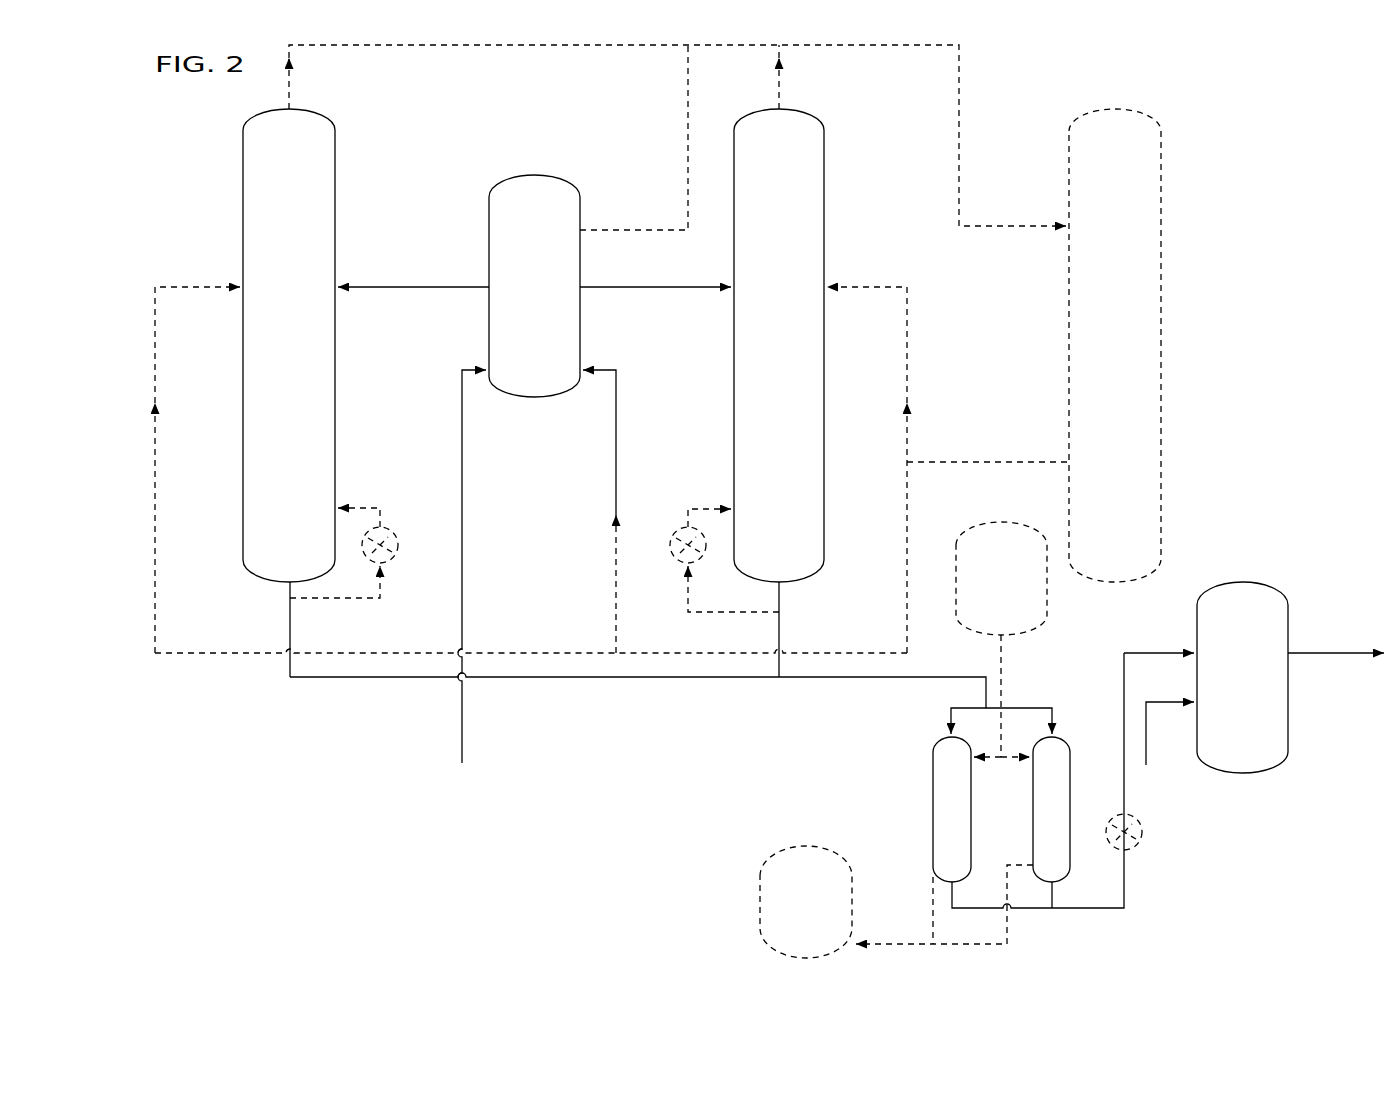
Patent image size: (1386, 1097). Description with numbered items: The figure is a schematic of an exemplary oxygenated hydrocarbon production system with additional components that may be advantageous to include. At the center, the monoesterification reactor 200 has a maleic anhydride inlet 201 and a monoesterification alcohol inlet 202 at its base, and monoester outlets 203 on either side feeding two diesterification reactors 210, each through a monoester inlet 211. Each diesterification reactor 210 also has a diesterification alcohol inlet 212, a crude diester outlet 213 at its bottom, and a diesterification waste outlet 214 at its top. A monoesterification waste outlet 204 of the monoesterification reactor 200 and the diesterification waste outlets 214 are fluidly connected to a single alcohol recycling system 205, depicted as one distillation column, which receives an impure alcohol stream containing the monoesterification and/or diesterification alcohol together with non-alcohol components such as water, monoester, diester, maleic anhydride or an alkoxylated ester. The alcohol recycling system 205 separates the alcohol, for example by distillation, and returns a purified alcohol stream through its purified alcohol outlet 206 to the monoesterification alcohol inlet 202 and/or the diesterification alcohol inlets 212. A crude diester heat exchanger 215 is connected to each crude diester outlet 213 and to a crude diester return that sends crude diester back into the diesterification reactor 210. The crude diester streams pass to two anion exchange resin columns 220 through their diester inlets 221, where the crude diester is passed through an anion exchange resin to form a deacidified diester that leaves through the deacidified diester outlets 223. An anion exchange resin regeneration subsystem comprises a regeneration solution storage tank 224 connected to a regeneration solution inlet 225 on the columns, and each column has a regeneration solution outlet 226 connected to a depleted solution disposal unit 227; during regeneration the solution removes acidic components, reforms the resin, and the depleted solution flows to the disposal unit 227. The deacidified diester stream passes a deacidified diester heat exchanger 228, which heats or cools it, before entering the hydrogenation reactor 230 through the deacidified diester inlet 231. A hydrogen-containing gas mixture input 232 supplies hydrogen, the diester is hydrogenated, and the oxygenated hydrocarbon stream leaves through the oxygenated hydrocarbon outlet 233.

The monoesterification reactor 200 is at (534, 286).
The maleic anhydride inlet 201 is at (468, 549).
The monoesterification alcohol inlet 202 is at (610, 494).
The monoester outlet 203 is at (534, 273).
The monoesterification waste outlet 204 is at (634, 137).
The alcohol recycling system 205 is at (1115, 345).
The purified alcohol outlet 206 is at (988, 450).
The diesterification reactor 210 is at (533, 345).
The monoester inlet 211 is at (540, 310).
The diesterification alcohol inlet 212 is at (531, 456).
The crude diester outlet 213 is at (534, 629).
The diesterification waste outlet 214 is at (677, 135).
The crude diester heat exchanger 215 is at (534, 546).
The anion exchange resin column 220 is at (1001, 809).
The diester inlet 221 is at (699, 707).
The deacidified diester outlet 223 is at (1038, 780).
The regeneration solution storage tank 224 is at (1001, 578).
The regeneration solution inlet 225 is at (1002, 711).
The regeneration solution outlet 226 is at (944, 891).
The depleted solution disposal unit 227 is at (806, 902).
The deacidified diester heat exchanger 228 is at (1153, 832).
The hydrogenation reactor 230 is at (1242, 677).
The deacidified diester inlet 231 is at (1159, 640).
The hydrogen-containing gas mixture input 232 is at (1170, 733).
The oxygenated hydrocarbon outlet 233 is at (1336, 638).